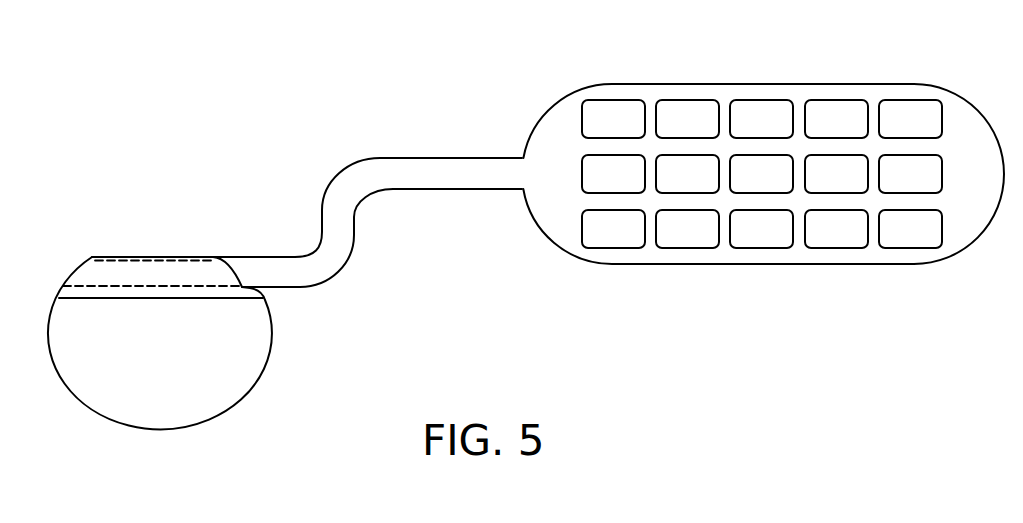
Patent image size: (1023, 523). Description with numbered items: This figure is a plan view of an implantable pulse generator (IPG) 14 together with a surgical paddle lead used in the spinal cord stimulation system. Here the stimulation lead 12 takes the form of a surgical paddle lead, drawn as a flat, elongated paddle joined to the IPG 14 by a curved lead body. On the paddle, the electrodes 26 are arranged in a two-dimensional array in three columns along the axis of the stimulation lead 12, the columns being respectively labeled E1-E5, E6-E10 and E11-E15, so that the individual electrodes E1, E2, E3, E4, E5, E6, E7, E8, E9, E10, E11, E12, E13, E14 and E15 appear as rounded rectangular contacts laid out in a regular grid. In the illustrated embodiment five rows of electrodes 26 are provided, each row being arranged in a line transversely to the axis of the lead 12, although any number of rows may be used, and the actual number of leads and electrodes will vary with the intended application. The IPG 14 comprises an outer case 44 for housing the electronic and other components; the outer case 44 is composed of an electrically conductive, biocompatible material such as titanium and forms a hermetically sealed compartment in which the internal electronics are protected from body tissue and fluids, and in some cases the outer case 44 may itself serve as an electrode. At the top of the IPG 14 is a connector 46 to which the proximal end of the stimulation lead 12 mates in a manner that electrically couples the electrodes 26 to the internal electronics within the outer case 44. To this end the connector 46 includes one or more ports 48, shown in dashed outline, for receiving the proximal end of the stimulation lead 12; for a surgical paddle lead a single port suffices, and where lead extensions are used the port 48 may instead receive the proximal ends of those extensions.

The stimulation lead 12 is at (377, 156).
The implantable pulse generator 14 is at (171, 307).
The electrodes 26 is at (762, 135).
The outer case 44 is at (270, 355).
The connector 46 is at (167, 257).
The ports 48 is at (143, 271).
The electrode E1 is at (613, 119).
The electrode E2 is at (687, 119).
The electrode E3 is at (761, 119).
The electrode E4 is at (836, 119).
The electrode E5 is at (910, 119).
The electrode E6 is at (613, 174).
The electrode E7 is at (687, 174).
The electrode E8 is at (761, 174).
The electrode E9 is at (836, 174).
The electrode E10 is at (910, 174).
The electrode E11 is at (613, 229).
The electrode E12 is at (687, 229).
The electrode E13 is at (761, 229).
The electrode E14 is at (836, 229).
The electrode E15 is at (910, 229).